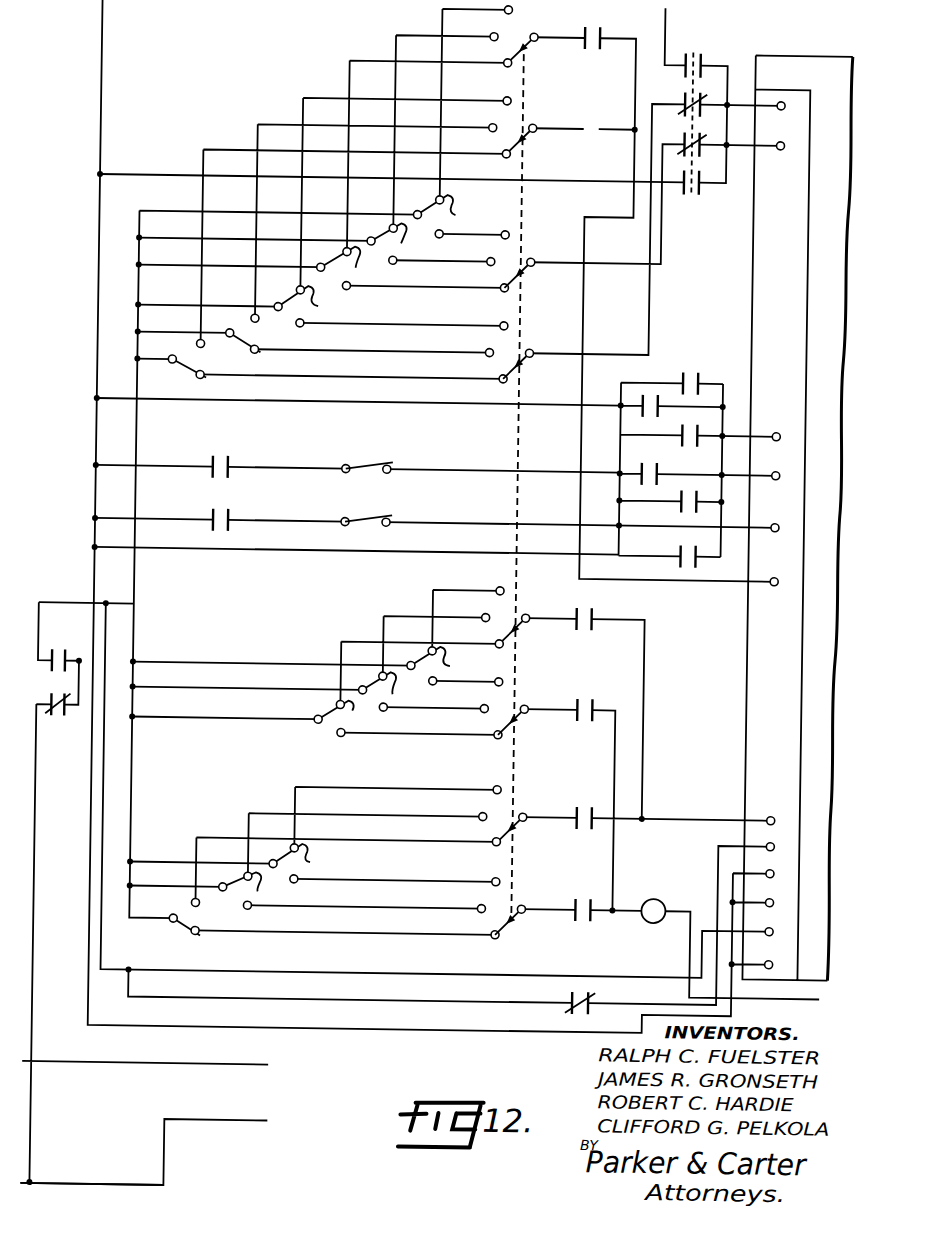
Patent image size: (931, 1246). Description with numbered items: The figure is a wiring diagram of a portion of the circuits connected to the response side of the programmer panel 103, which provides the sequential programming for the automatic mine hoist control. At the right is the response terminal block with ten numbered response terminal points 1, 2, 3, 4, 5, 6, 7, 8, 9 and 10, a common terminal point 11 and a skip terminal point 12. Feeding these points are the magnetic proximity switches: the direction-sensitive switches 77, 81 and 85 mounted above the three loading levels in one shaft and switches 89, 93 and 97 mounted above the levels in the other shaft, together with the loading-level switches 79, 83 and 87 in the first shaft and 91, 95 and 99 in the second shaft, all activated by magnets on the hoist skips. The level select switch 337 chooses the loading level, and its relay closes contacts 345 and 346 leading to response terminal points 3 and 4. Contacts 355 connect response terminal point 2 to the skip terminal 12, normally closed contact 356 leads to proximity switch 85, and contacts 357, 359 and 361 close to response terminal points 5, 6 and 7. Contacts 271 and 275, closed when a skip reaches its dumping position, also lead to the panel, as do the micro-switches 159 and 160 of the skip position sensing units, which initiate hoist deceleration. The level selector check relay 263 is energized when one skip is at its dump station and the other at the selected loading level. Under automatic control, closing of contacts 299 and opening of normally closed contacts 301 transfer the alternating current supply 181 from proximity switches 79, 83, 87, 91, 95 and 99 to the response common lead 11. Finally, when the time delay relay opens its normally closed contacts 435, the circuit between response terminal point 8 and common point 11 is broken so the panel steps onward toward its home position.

The programmer panel 103 is at (831, 14).
The proximity switch 77 is at (461, 217).
The proximity switch 81 is at (431, 244).
The proximity switch 85 is at (412, 269).
The proximity switch 89 is at (391, 308).
The proximity switch 93 is at (253, 343).
The proximity switch 97 is at (207, 357).
The proximity switch 79 is at (455, 665).
The proximity switch 83 is at (423, 692).
The proximity switch 87 is at (350, 714).
The proximity switch 91 is at (385, 865).
The proximity switch 95 is at (352, 892).
The proximity switch 99 is at (195, 925).
The level select switch 337 is at (535, 36).
The contacts 359 is at (597, 20).
The contacts 361 is at (600, 602).
The contacts 275 is at (592, 693).
The contacts 271 is at (588, 916).
The contacts 357 is at (235, 507).
The contacts 355 is at (691, 188).
The normally closed contact 356 is at (708, 118).
The contacts 345 is at (696, 439).
The contacts 346 is at (662, 450).
The mechanical micro-switch 160 is at (396, 458).
The mechanically operated micro-switch 159 is at (396, 511).
The contacts 299 is at (84, 638).
The normally closed contacts 301 is at (54, 723).
The level selector check relay 263 is at (652, 892).
The normally closed contacts 435 is at (584, 1008).
The alternating current electrical supply 181 is at (126, 1158).
The response terminal point 1 is at (790, 107).
The response terminal point 2 is at (789, 147).
The response terminal point 3 is at (785, 438).
The response terminal point 4 is at (785, 477).
The response terminal point 5 is at (784, 529).
The response terminal point 6 is at (783, 583).
The response terminal point 7 is at (780, 822).
The response terminal point 8 is at (779, 848).
The response terminal point 9 is at (779, 875).
The response terminal point 10 is at (784, 904).
The common terminal point 11 is at (784, 933).
The skip terminal point 12 is at (783, 966).